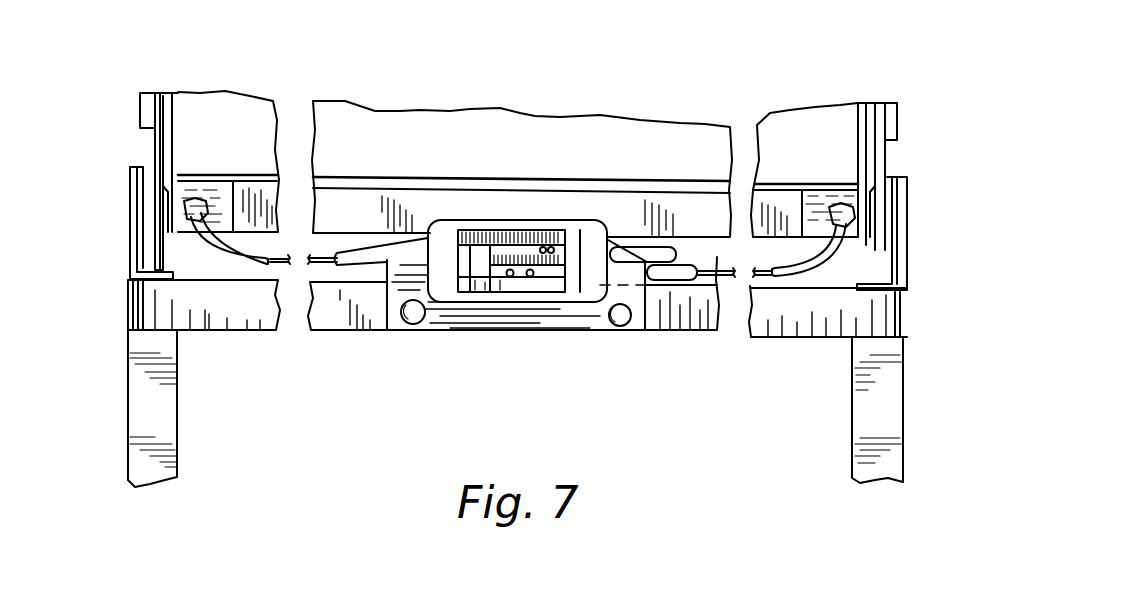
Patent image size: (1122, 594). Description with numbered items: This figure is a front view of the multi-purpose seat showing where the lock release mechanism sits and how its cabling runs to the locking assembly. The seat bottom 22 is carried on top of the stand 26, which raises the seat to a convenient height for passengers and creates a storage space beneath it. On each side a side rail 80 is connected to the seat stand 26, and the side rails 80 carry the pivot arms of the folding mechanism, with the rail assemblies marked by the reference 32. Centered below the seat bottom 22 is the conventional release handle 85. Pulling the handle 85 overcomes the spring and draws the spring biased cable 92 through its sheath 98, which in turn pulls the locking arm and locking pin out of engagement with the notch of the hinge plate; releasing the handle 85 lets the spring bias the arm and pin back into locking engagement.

The seat bottom 22 is at (553, 143).
The stand 26 is at (160, 420).
The side rail assembly 32 is at (97, 149).
The side rail 80 is at (130, 250).
The release handle 85 is at (568, 287).
The spring biased cable 92 is at (289, 268).
The sheath 98 is at (233, 252).